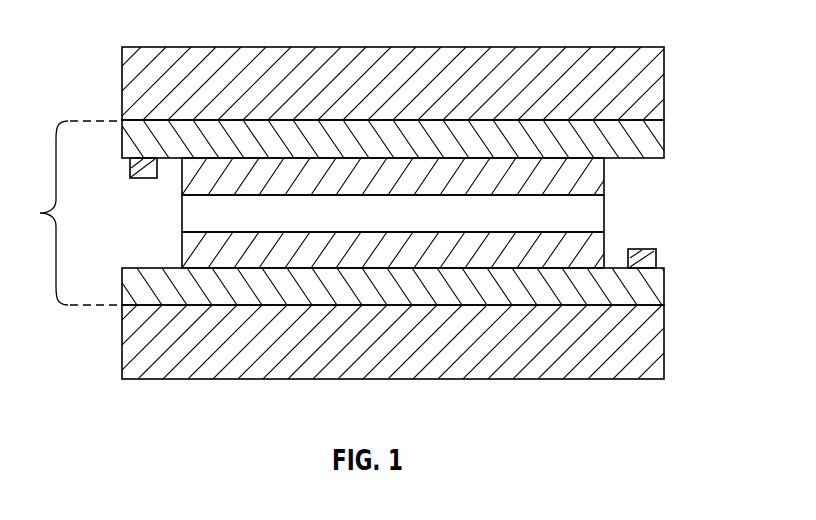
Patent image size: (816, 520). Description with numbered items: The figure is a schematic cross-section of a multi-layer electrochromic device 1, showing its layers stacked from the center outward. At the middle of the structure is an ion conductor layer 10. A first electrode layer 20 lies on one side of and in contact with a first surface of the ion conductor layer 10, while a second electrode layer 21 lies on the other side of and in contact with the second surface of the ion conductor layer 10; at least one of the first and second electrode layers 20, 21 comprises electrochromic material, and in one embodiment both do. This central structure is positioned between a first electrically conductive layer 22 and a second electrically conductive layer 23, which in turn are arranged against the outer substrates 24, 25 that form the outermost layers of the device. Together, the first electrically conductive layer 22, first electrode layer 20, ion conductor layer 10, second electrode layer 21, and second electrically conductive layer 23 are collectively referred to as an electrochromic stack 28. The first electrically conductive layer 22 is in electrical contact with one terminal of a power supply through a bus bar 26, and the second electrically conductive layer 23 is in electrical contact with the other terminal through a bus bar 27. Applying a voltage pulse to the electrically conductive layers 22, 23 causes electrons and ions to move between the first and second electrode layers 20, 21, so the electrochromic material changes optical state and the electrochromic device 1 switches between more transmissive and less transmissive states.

The electrochromic device 1 is at (101, 29).
The ion conductor layer 10 is at (597, 210).
The first electrode layer 20 is at (187, 243).
The second electrode layer 21 is at (600, 178).
The first electrically conductive layer 22 is at (657, 283).
The second electrically conductive layer 23 is at (652, 140).
The outer substrate 24 is at (657, 342).
The outer substrate 25 is at (655, 94).
The bus bar 26 is at (658, 262).
The bus bar 27 is at (137, 180).
The electrochromic stack 28 is at (66, 213).